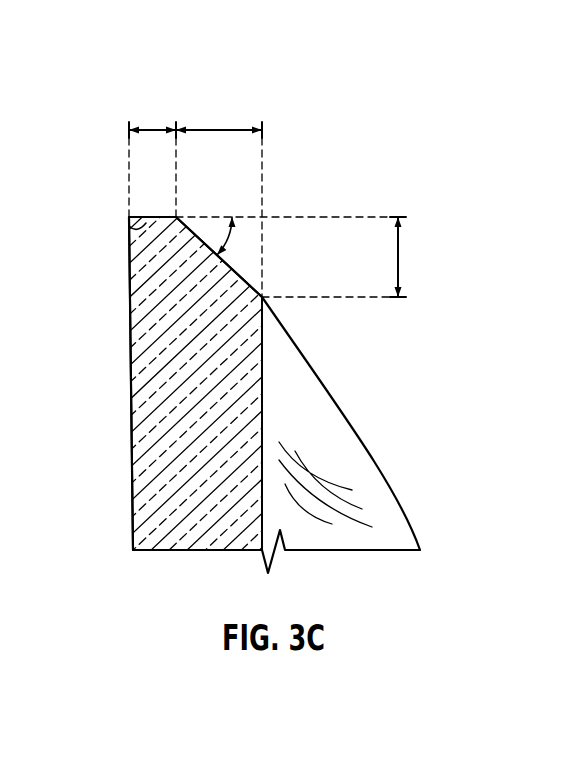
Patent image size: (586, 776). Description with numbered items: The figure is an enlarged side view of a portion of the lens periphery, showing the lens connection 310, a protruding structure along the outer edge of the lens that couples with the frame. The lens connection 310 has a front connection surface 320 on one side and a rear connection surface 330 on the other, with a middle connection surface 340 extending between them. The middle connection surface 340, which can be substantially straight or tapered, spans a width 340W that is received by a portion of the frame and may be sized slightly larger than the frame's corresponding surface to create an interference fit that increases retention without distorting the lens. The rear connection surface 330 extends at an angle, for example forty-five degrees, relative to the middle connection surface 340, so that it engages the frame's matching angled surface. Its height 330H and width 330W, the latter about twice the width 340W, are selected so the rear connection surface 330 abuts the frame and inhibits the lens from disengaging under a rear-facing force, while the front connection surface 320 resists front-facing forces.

The lens connection 310 is at (148, 293).
The front connection surface 320 is at (128, 260).
The rear connection surface 330 is at (243, 278).
The middle connection surface 340 is at (129, 226).
The width of the middle connection surface 340W is at (153, 130).
The width of the rear connection surface 330W is at (228, 130).
The height of the rear connection surface 330H is at (398, 258).